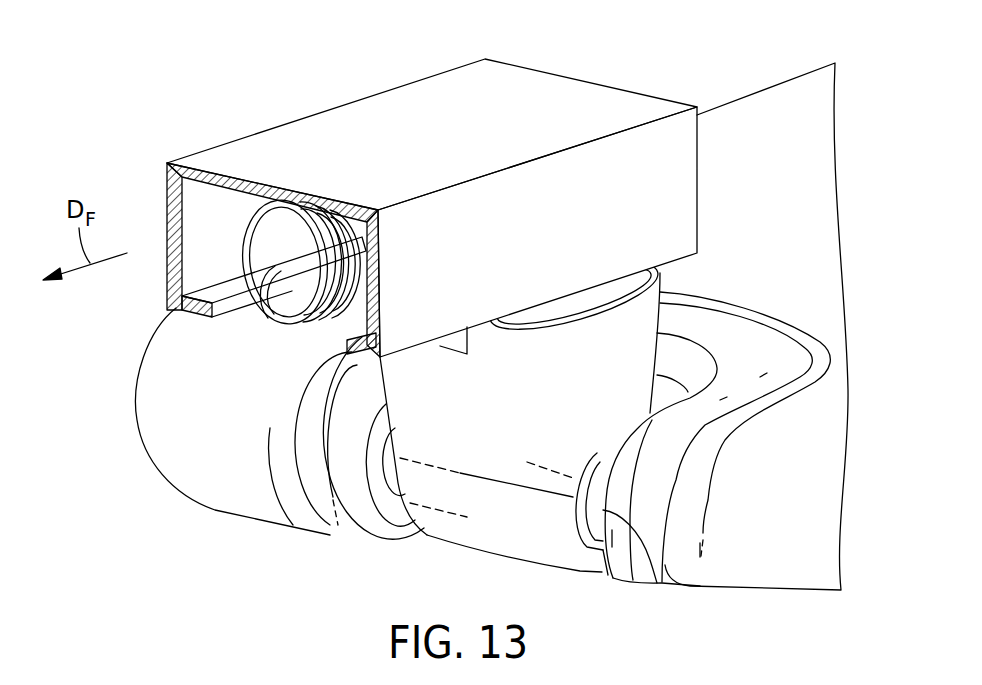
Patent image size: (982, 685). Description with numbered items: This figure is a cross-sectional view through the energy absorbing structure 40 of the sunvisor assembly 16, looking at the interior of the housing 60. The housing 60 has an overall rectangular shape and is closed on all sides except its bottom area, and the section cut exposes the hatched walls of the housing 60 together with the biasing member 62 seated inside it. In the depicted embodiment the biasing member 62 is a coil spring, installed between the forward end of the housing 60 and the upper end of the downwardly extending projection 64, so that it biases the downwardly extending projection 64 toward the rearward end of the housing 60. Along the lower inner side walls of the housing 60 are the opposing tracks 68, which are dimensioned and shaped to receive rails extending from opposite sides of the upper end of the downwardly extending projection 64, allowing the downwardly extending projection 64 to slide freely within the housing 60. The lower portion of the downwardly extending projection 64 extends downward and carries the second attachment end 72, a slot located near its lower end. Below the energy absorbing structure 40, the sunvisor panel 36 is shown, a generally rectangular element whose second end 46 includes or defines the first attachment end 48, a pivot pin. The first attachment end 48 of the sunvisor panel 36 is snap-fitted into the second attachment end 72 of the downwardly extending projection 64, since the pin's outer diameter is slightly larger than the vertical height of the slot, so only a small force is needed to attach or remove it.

The sunvisor assembly 16 is at (726, 98).
The sunvisor panel 36 is at (770, 190).
The energy absorbing structure 40 is at (301, 111).
The second end 46 is at (727, 425).
The first attachment end 48 is at (600, 480).
The housing 60 is at (512, 97).
The biasing member 62 is at (250, 260).
The downwardly extending projection 64 is at (503, 440).
The tracks 68 is at (180, 308).
The second attachment end 72 is at (656, 580).